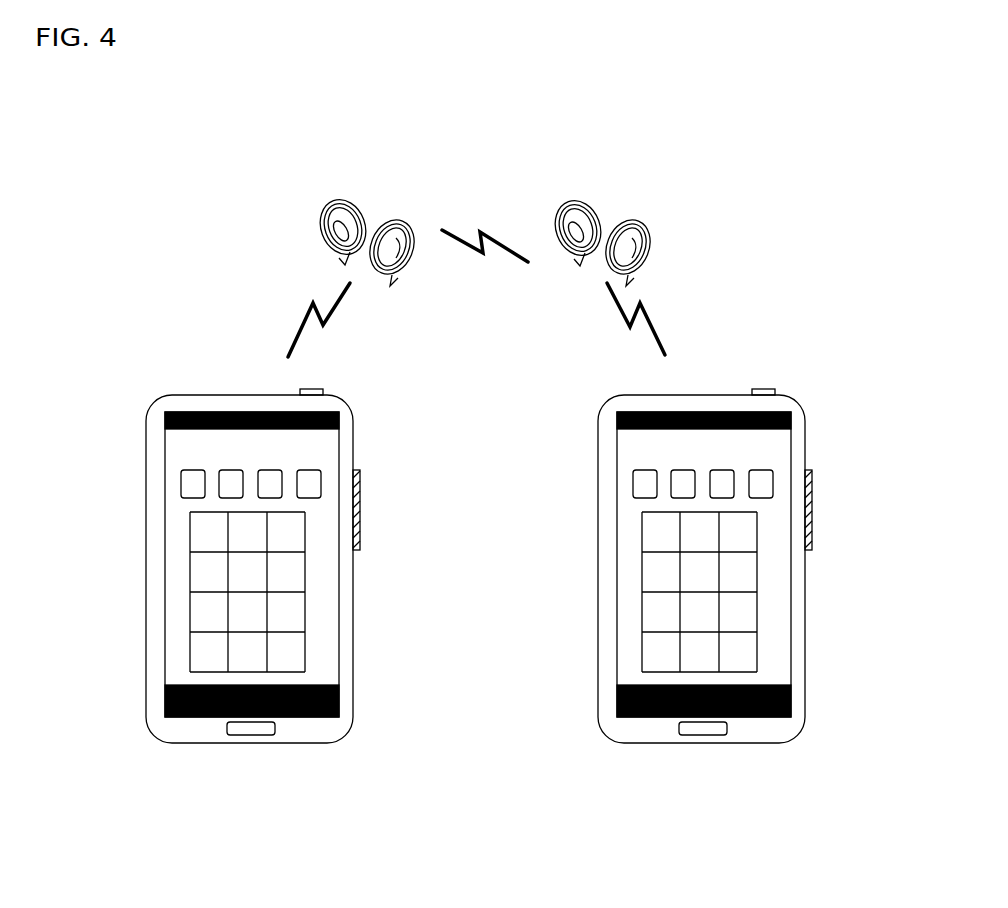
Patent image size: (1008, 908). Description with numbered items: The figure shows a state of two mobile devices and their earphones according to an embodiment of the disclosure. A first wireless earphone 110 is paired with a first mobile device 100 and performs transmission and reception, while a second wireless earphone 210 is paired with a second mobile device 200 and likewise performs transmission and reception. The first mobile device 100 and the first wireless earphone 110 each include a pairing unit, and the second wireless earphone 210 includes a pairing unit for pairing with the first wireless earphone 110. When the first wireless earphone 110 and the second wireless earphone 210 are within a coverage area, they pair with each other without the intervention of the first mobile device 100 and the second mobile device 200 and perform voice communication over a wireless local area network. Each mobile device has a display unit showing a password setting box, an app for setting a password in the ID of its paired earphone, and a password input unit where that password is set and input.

The first mobile device 100 is at (241, 561).
The second mobile device 200 is at (693, 561).
The first wireless earphone 110 is at (395, 218).
The second wireless earphone 210 is at (632, 218).